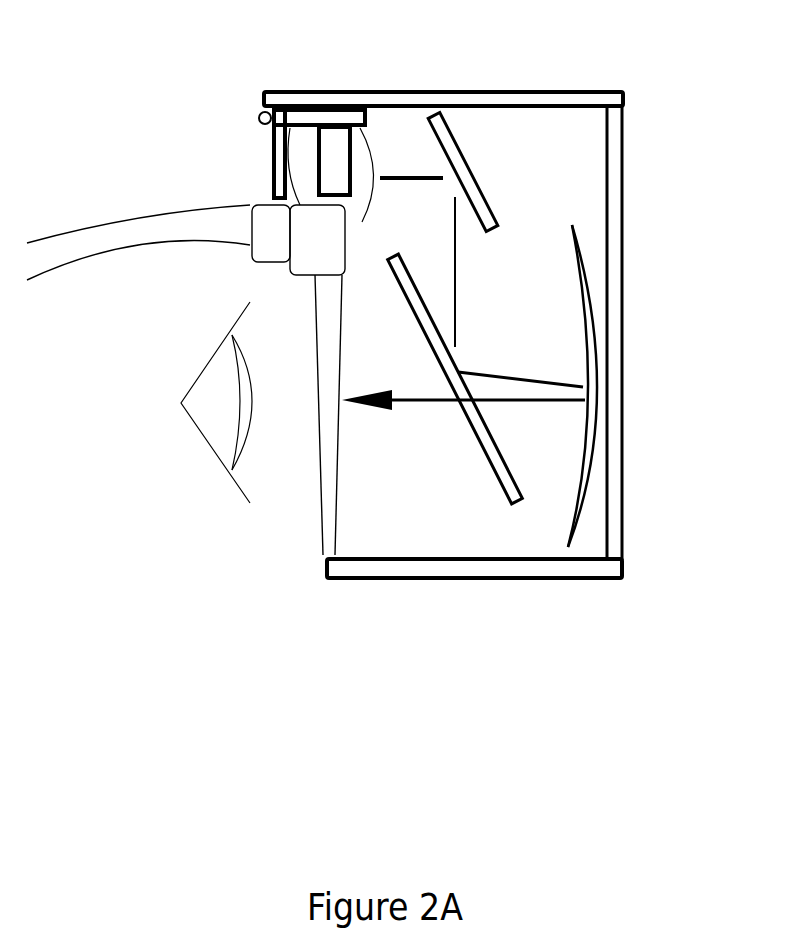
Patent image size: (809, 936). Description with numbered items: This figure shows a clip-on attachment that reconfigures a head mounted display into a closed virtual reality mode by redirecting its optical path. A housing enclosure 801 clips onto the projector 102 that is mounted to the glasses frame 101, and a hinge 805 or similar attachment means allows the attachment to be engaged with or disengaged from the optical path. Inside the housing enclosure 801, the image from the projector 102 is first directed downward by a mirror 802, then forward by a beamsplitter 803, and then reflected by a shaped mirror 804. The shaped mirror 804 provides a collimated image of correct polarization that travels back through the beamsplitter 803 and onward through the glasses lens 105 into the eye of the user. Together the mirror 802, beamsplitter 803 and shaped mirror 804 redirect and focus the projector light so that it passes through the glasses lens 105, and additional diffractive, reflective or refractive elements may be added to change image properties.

The housing enclosure 801 is at (655, 509).
The mirror 802 is at (455, 112).
The beamsplitter 803 is at (460, 368).
The shaped mirror 804 is at (594, 325).
The hinge 805 is at (262, 112).
The projector 102 is at (303, 182).
The glasses frame 101 is at (186, 266).
The glasses lens 105 is at (325, 522).